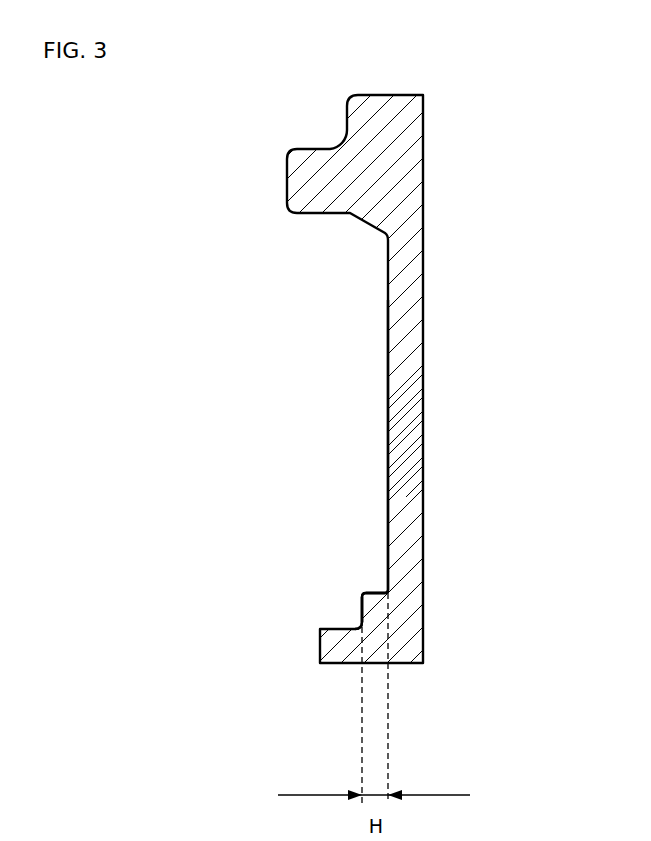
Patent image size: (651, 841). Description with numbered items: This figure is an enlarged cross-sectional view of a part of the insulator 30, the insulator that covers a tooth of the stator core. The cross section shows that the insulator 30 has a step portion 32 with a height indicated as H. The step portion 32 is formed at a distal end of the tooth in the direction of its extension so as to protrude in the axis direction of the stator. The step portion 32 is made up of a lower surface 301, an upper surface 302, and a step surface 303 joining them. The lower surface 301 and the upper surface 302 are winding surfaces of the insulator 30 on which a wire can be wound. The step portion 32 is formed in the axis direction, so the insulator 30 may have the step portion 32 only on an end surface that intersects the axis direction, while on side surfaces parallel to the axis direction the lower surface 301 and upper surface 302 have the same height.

The insulator 30 is at (293, 148).
The lower surface of the step portion 301 is at (387, 492).
The step portion 32 is at (356, 598).
The step surface 303 is at (368, 592).
The upper surface of the step portion 302 is at (358, 613).